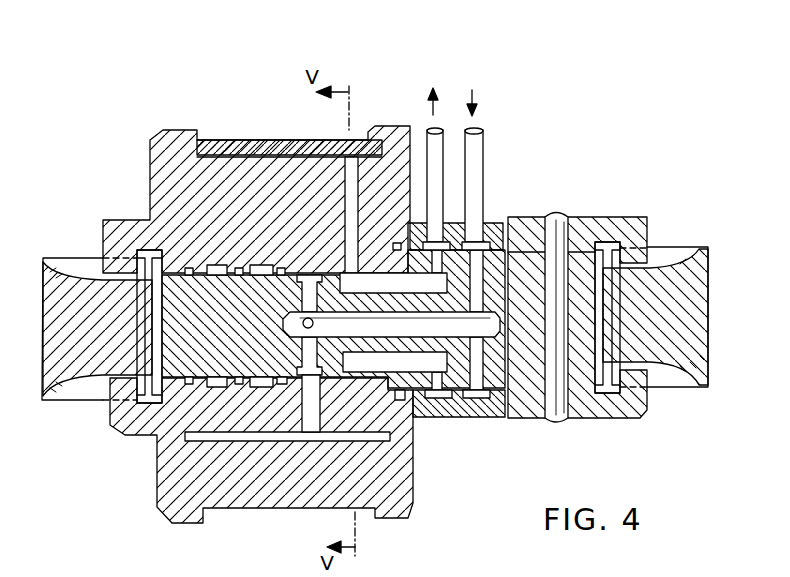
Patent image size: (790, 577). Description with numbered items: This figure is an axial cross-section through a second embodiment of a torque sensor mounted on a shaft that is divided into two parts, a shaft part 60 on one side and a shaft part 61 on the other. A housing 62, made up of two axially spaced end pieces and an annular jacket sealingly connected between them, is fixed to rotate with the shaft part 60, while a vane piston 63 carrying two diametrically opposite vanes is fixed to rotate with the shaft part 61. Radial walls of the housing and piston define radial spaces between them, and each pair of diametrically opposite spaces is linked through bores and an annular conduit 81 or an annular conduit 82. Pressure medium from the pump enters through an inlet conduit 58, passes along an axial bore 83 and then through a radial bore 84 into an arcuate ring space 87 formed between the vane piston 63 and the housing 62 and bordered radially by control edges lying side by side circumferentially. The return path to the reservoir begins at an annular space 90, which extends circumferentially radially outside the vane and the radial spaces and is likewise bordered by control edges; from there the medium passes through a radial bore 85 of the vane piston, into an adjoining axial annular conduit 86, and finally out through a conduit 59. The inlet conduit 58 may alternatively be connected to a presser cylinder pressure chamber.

The inlet conduit 58 is at (476, 155).
The conduit 59 is at (428, 150).
The shaft part 60 is at (51, 258).
The shaft part 61 is at (690, 250).
The housing 62 is at (176, 512).
The vane piston 63 is at (252, 177).
The annular conduit 81 is at (220, 387).
The annular conduit 82 is at (263, 387).
The axial bore 83 is at (462, 326).
The radial bore 84 is at (298, 378).
The radial bore 85 is at (350, 175).
The axial annular conduit 86 is at (420, 360).
The arcuate ring space 87 is at (311, 423).
The annular space 90 is at (289, 150).